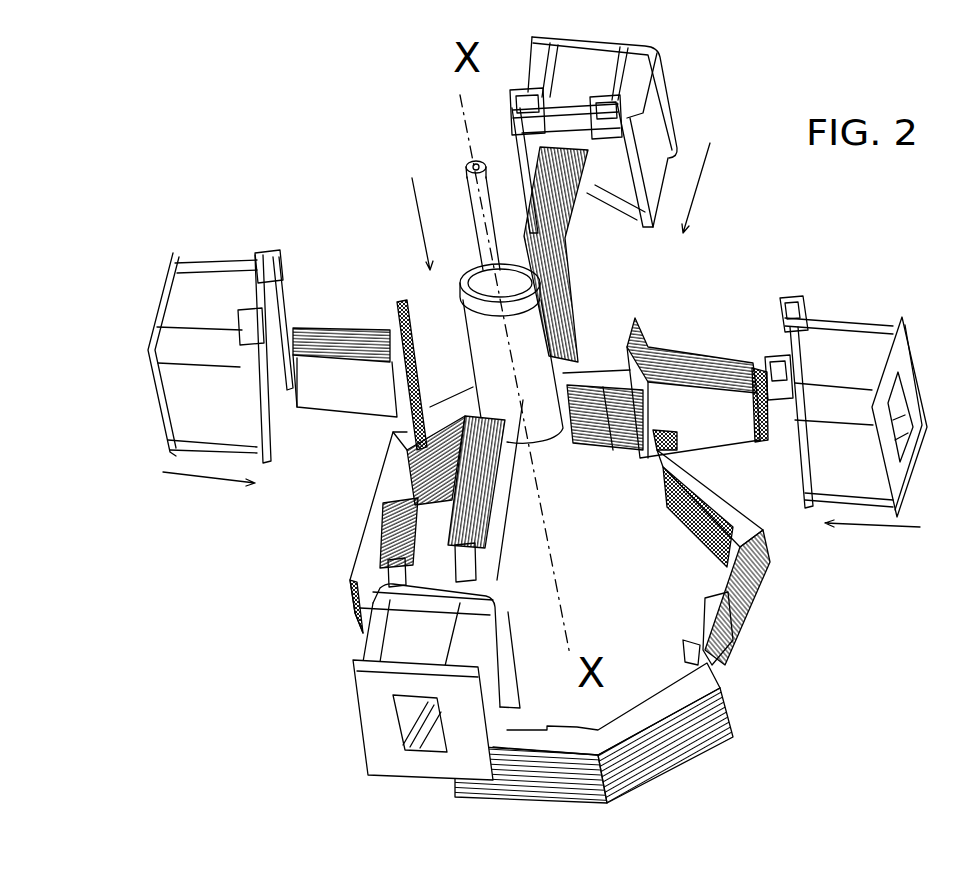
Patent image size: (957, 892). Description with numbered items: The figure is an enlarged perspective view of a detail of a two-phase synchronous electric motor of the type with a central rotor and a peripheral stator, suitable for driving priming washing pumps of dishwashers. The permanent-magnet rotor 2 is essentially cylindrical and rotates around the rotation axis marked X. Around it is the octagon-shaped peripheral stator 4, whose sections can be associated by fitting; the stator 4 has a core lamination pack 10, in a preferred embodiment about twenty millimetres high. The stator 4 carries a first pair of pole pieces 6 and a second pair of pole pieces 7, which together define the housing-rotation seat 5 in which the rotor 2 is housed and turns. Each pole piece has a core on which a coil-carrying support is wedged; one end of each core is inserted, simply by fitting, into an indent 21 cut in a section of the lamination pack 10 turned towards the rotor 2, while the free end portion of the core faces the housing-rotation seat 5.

The rotor 2 is at (540, 363).
The peripheral stator 4 is at (350, 542).
The housing-rotation seat 5 is at (622, 557).
The first pair of pole pieces 6 is at (430, 328).
The second pair of pole pieces 7 is at (525, 480).
The core lamination pack 10 is at (730, 527).
The indent 21 is at (753, 650).